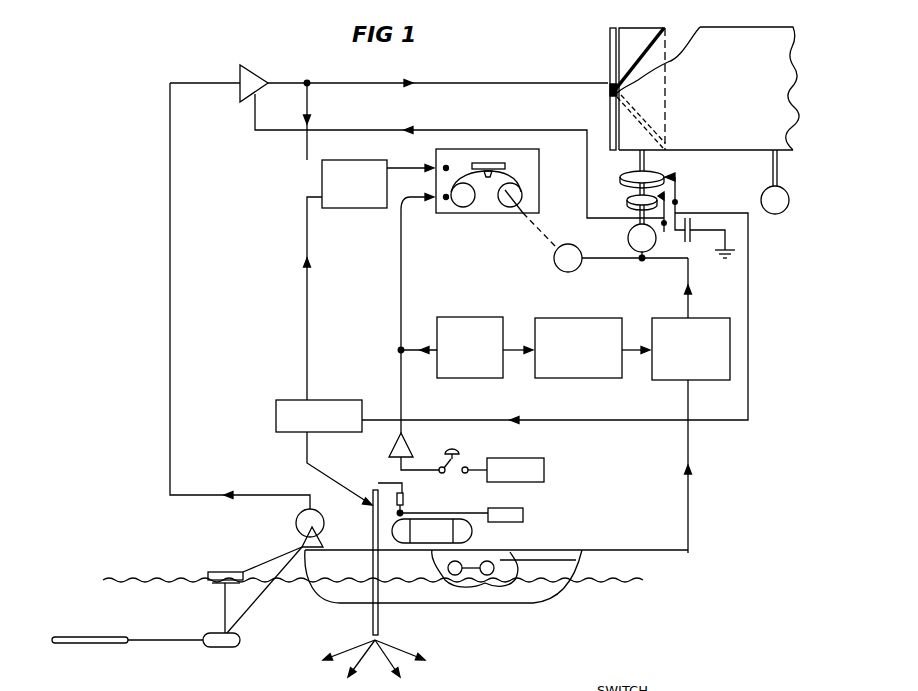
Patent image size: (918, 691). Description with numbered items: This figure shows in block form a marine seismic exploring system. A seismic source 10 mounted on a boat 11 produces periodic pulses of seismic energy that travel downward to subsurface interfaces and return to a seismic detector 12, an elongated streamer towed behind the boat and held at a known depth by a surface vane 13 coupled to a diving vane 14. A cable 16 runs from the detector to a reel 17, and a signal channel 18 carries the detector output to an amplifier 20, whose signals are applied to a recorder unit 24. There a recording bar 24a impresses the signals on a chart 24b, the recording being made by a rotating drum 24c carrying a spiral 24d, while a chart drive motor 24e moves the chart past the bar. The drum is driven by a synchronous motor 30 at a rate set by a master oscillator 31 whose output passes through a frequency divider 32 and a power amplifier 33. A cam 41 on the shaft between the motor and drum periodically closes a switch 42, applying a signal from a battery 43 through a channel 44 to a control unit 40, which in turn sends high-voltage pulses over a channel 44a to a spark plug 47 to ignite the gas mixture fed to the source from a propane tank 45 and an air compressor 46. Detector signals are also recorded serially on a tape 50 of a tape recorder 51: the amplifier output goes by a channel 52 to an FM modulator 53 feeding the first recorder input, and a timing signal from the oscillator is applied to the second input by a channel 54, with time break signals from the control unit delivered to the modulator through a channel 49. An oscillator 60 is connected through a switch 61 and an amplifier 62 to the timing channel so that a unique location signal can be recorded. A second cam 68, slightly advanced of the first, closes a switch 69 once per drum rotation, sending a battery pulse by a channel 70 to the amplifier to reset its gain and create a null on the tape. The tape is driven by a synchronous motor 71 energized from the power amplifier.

The seismic source 10 is at (381, 615).
The boat 11 is at (533, 603).
The seismic detector 12 is at (88, 645).
The surface vane 13 is at (240, 568).
The diving vane 14 is at (226, 649).
The cable 16 is at (258, 604).
The reel 17 is at (296, 523).
The signal channel 18 is at (170, 307).
The amplifier 20 is at (250, 73).
The recorder unit 24 is at (664, 22).
The recording bar 24a is at (609, 42).
The chart 24b is at (730, 152).
The rotating drum 24c is at (632, 27).
The spiral 24d is at (632, 62).
The chart drive motor 24e is at (781, 215).
The motor 30 is at (628, 236).
The master oscillator 31 is at (483, 317).
The frequency divider 32 is at (590, 318).
The power amplifier 33 is at (680, 318).
The control unit 40 is at (322, 400).
The cam 41 is at (620, 174).
The switch 42 is at (677, 190).
The battery 43 is at (690, 242).
The channel 44 is at (749, 326).
The channel 44a is at (316, 472).
The tank 45 is at (472, 533).
The air compressor 46 is at (523, 515).
The spark plug 47 is at (412, 511).
The channel 49 is at (307, 296).
The tape 50 is at (521, 178).
The tape recorder 51 is at (495, 213).
The channel 52 is at (306, 143).
The FM modulator 53 is at (322, 183).
The channel 54 is at (401, 304).
The oscillator 60 is at (544, 472).
The switch 61 is at (455, 450).
The amplifier 62 is at (388, 447).
The cam 68 is at (627, 198).
The switch 69 is at (664, 232).
The channel 70 is at (448, 130).
The synchronous motor 71 is at (554, 259).